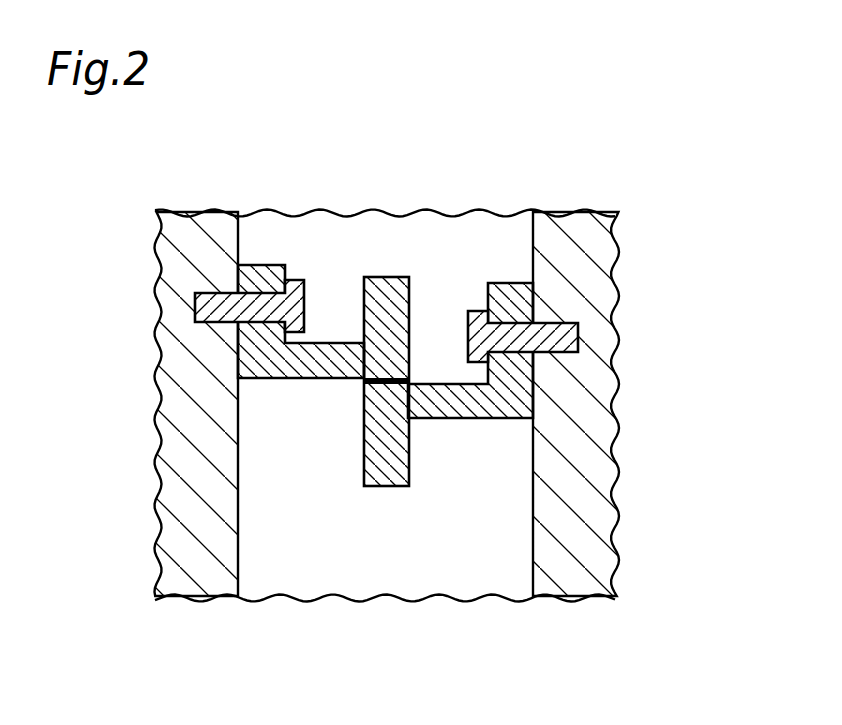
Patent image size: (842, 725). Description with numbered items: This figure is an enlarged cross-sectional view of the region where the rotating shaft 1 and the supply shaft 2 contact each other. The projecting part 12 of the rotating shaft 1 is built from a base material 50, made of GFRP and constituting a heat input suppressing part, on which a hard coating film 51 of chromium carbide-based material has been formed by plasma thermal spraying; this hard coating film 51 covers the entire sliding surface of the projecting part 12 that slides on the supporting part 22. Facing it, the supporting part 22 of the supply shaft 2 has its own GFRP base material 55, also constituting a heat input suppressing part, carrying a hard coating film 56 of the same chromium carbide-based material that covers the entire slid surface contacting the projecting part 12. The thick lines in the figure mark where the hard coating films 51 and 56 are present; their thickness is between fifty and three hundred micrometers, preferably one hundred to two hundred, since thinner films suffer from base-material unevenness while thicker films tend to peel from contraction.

The rotating shaft 1 is at (170, 418).
The supply shaft 2 is at (597, 340).
The projecting part 12 is at (319, 360).
The supporting part 22 is at (465, 402).
The base material 50 is at (343, 362).
The hard coating film 51 is at (373, 378).
The base material 55 is at (438, 400).
The hard coating film 56 is at (378, 382).